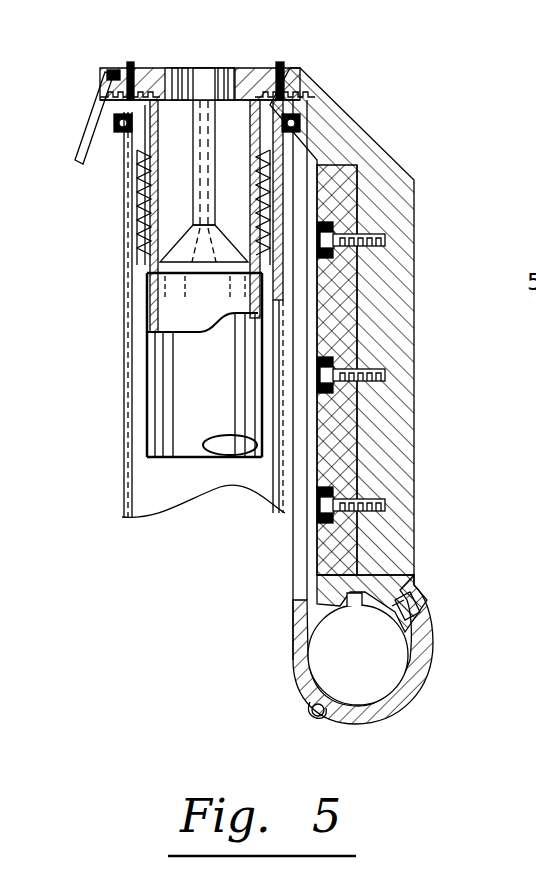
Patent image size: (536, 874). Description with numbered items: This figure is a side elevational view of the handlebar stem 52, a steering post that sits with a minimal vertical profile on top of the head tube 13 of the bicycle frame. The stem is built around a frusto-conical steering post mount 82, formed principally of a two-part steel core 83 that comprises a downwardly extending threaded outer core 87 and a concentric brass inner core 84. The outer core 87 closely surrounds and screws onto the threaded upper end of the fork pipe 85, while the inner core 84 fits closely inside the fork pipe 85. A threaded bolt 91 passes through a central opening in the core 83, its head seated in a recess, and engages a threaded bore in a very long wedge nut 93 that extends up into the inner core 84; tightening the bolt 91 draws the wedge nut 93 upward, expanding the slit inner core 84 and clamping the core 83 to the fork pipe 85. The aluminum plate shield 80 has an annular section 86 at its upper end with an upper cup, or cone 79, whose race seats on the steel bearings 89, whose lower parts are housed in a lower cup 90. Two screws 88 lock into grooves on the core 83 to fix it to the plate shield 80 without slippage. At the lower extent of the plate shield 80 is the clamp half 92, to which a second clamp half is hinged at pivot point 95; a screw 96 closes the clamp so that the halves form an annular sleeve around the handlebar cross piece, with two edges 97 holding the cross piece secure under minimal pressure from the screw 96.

The head tube 13 is at (127, 450).
The handlebar stem 52 is at (383, 83).
The cone 79 is at (107, 97).
The plate shield 80 is at (338, 445).
The steering post mount 82 is at (102, 80).
The core 83 is at (278, 62).
The inner core 84 is at (140, 245).
The fork pipe 85 is at (168, 407).
The annular section 86 is at (80, 155).
The outer core 87 is at (137, 220).
The screws 88 is at (128, 70).
The bearings 89 is at (333, 110).
The lower cup 90 is at (95, 123).
The bolt 91 is at (220, 72).
The clamp half 92 is at (414, 580).
The wedge nut 93 is at (230, 217).
The pivot point 95 is at (308, 724).
The screw 96 is at (420, 617).
The edges 97 is at (293, 652).